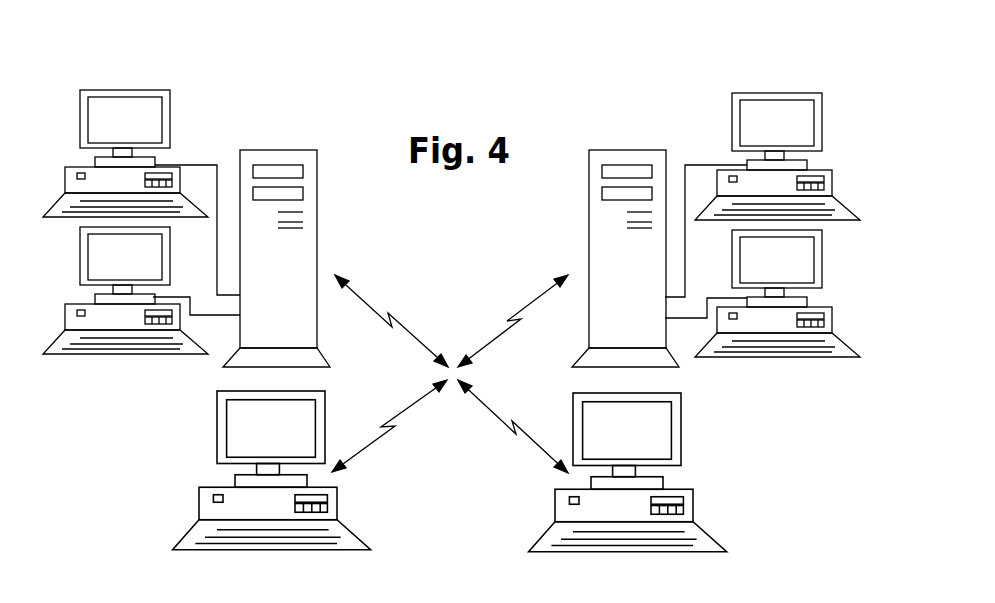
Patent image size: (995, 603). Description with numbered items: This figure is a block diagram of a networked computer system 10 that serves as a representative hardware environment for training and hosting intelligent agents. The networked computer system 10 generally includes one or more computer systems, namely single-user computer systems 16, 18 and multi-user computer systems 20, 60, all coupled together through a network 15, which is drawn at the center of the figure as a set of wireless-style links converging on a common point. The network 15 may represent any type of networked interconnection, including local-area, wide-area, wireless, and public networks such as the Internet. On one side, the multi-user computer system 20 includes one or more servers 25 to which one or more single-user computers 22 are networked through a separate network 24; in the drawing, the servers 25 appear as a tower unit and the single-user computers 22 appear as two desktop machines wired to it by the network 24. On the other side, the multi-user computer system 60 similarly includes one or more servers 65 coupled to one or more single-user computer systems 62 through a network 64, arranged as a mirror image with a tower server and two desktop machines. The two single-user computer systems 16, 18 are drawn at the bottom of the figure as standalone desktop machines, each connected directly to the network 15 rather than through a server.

The networked computer system 10 is at (572, 90).
The network 15 is at (378, 300).
The single-user computer system 16 is at (220, 487).
The single-user computer system 18 is at (692, 488).
The multi-user computer system 20 is at (92, 70).
The single-user computers 22 is at (157, 95).
The network 24 is at (202, 163).
The servers 25 is at (267, 148).
The multi-user computer system 60 is at (762, 80).
The single-user computer systems 62 is at (820, 112).
The network 64 is at (708, 163).
The servers 65 is at (640, 148).